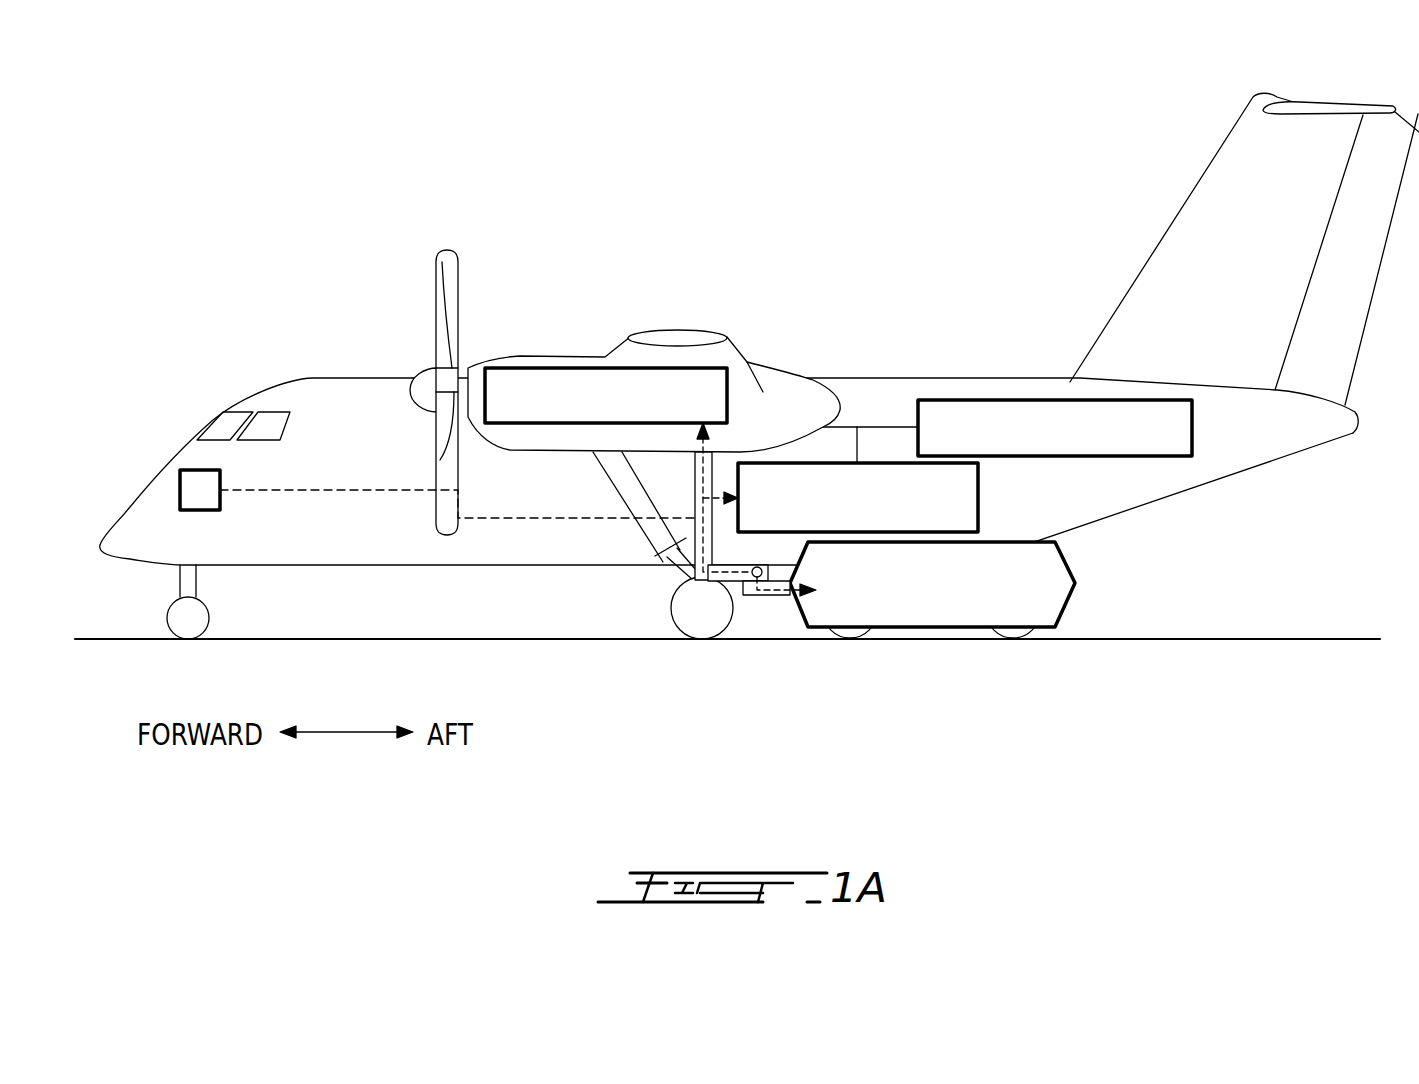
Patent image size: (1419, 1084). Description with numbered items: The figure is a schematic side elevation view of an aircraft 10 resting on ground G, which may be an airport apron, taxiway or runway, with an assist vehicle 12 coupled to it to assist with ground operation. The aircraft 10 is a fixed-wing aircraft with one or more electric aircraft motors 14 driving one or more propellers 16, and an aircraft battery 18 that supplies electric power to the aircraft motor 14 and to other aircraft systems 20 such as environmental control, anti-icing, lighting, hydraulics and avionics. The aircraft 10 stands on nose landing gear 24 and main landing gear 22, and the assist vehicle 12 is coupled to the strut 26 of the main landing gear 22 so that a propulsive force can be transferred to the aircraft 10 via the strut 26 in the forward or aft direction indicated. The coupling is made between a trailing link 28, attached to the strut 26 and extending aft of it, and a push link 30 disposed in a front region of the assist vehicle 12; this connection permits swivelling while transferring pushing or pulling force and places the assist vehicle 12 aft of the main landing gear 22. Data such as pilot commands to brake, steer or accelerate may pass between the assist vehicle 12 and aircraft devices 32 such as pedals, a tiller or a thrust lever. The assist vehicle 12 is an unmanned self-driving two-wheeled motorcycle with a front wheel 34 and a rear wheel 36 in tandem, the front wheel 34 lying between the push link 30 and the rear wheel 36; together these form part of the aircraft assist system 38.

The aircraft 10 is at (347, 405).
The assist vehicle 12 is at (1075, 598).
The electric aircraft motor 14 is at (572, 367).
The propeller 16 is at (441, 272).
The aircraft battery 18 is at (1053, 399).
The aircraft systems 20 is at (978, 497).
The main landing gear 22 is at (644, 596).
The nose landing gear 24 is at (216, 599).
The strut 26 is at (690, 537).
The trailing link 28 is at (735, 600).
The push link 30 is at (770, 597).
The aircraft devices 32 is at (180, 490).
The front wheel 34 is at (843, 639).
The rear wheel 36 is at (1015, 639).
The aircraft assist system 38 is at (665, 737).
The ground G is at (1260, 641).